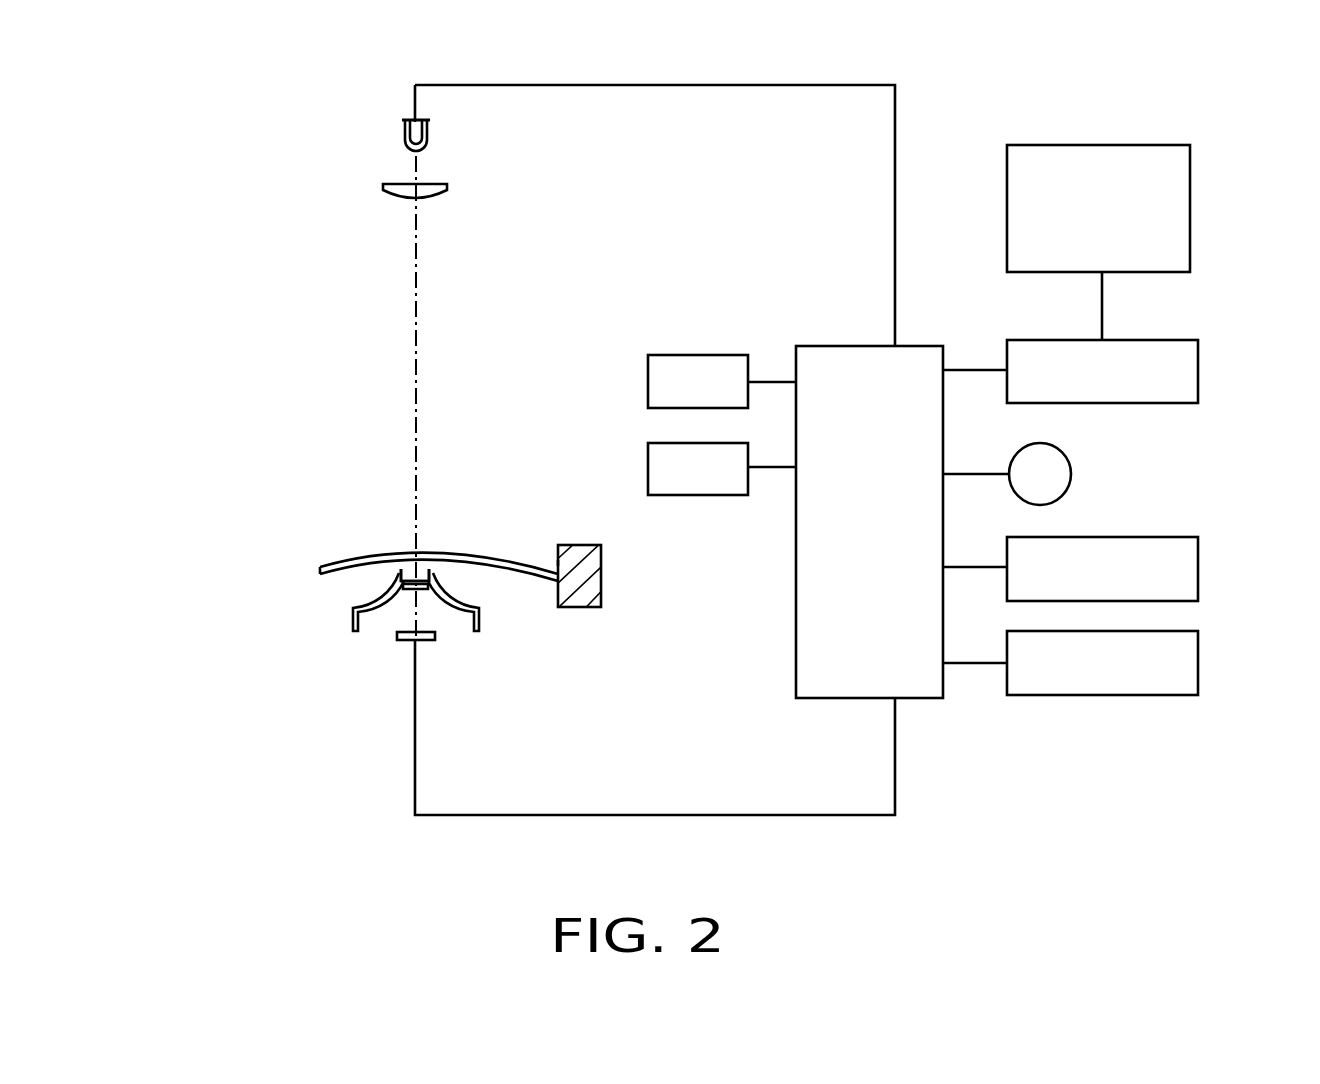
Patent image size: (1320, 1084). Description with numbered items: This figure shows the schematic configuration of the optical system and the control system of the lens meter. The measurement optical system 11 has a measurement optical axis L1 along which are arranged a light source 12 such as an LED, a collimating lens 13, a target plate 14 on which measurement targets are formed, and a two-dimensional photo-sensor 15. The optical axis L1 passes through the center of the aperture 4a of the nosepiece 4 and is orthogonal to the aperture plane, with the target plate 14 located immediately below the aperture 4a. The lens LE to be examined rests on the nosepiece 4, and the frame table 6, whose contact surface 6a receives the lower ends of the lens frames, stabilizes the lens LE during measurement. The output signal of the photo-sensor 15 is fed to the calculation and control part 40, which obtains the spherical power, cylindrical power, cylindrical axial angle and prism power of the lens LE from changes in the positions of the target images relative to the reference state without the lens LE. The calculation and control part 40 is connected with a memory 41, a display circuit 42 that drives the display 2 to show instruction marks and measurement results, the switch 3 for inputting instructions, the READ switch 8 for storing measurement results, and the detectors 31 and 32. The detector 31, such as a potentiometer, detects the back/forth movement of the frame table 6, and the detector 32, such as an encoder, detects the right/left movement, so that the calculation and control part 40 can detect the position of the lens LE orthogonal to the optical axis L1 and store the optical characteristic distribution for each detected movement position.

The display 2 is at (1130, 143).
The switch 3 is at (1198, 663).
The nosepiece 4 is at (400, 571).
The aperture 4a is at (423, 560).
The frame table 6 is at (601, 578).
The contact surface 6a is at (558, 561).
The READ switch 8 is at (1071, 472).
The measurement optical system 11 is at (196, 287).
The light source 12 is at (404, 133).
The collimating lens 13 is at (385, 186).
The target plate 14 is at (405, 592).
The photo-sensor 15 is at (422, 641).
The detector 31 is at (648, 383).
The detector 32 is at (648, 468).
The calculation and control part 40 is at (796, 625).
The memory 41 is at (1198, 565).
The display circuit 42 is at (1198, 370).
The measurement optical axis L1 is at (416, 368).
The lens LE is at (398, 558).